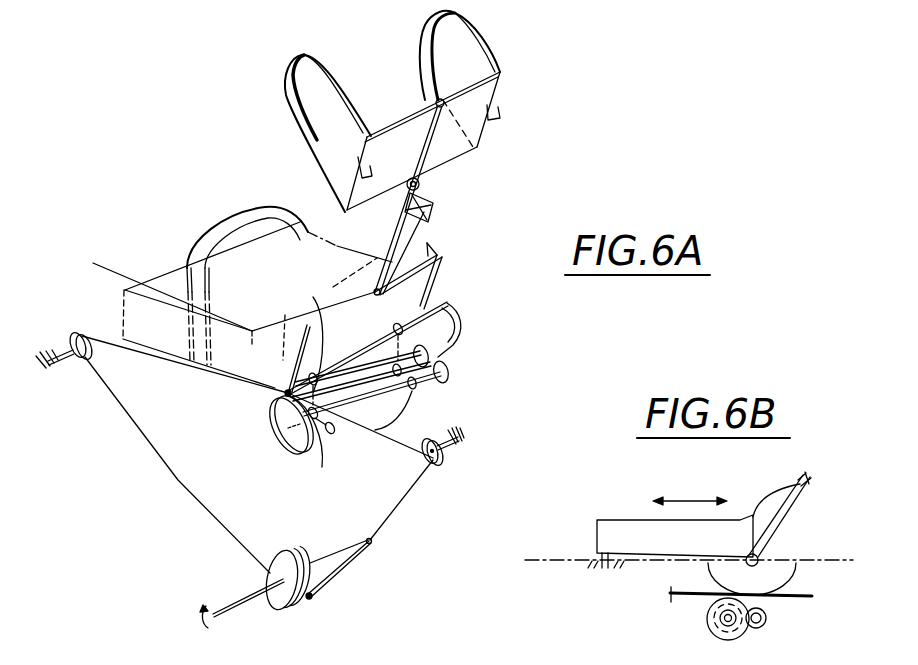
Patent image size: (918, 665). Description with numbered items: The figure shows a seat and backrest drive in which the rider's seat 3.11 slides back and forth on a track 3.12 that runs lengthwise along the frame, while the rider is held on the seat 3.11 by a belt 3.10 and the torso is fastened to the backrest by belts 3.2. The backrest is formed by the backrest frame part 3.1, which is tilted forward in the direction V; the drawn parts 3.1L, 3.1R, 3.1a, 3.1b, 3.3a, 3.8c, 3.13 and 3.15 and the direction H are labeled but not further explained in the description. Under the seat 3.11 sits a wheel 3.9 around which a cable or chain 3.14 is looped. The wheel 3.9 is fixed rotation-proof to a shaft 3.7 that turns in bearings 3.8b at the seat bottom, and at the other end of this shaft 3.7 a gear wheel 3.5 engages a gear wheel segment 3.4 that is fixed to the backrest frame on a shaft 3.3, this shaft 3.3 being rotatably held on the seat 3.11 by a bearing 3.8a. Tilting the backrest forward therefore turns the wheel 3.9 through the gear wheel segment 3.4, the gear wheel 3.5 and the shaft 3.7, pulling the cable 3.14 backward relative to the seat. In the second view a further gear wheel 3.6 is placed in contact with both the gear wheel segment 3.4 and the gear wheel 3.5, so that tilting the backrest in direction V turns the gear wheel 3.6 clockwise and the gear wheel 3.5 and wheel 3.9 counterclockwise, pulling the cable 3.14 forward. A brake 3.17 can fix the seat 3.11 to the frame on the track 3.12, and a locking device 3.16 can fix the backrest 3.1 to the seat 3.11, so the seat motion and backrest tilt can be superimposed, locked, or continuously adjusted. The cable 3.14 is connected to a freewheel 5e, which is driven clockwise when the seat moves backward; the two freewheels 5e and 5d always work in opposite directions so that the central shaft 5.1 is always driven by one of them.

In FIG. 6A, the backrest frame part 3.1 is at (425, 220).
In FIG. 6B, the backrest frame part 3.1 is at (783, 522).
In FIG. 6A, the left backrest part 3.1L is at (395, 130).
In FIG. 6A, the right backrest part 3.1R is at (503, 115).
In FIG. 6A, the backrest hinge 3.1a is at (427, 179).
In FIG. 6A, the hinge bracket 3.1b is at (436, 203).
In FIG. 6A, the belts 3.2 is at (487, 32).
In FIG. 6A, the shaft 3.3 is at (443, 277).
In FIG. 6A, the frame bracket 3.3a is at (452, 300).
In FIG. 6A, the gear wheel segment 3.4 is at (449, 318).
In FIG. 6B, the gear wheel segment 3.4 is at (710, 568).
In FIG. 6A, the gear wheel 3.5 is at (430, 352).
In FIG. 6B, the gear wheel 3.5 is at (711, 632).
In FIG. 6A, the gear wheel 3.6 is at (451, 364).
In FIG. 6B, the gear wheel 3.6 is at (768, 617).
In FIG. 6A, the shaft 3.7 is at (420, 389).
In FIG. 6A, the bearing 3.8a is at (318, 297).
In FIG. 6B, the bearing 3.8a is at (767, 553).
In FIG. 6A, the bearings 3.8b is at (303, 413).
In FIG. 6A, the pivot 3.8c is at (331, 432).
In FIG. 6A, the wheel 3.9 is at (320, 467).
In FIG. 6B, the wheel 3.9 is at (672, 598).
In FIG. 6A, the belt 3.10 is at (243, 210).
In FIG. 6A, the seat 3.11 is at (178, 260).
In FIG. 6B, the seat 3.11 is at (598, 528).
In FIG. 6A, the track 3.12 is at (124, 287).
In FIG. 6B, the track 3.12 is at (548, 557).
In FIG. 6A, the backrest diagonal 3.13 is at (475, 100).
In FIG. 6A, the cable 3.14 is at (407, 493).
In FIG. 6B, the cable 3.14 is at (803, 590).
In FIG. 6A, the cable wheel 3.15 is at (75, 333).
In FIG. 6B, the locking device 3.16 is at (804, 482).
In FIG. 6B, the brake 3.17 is at (600, 567).
In FIG. 6A, the freewheel 5d is at (300, 553).
In FIG. 6A, the central shaft 5.1 is at (242, 597).
In FIG. 6A, the freewheel 5e is at (313, 597).
In FIG. 6A, the direction V is at (157, 290).
In FIG. 6B, the direction V is at (630, 499).
In FIG. 6A, the horizontal direction H is at (435, 362).
In FIG. 6B, the horizontal direction H is at (701, 499).